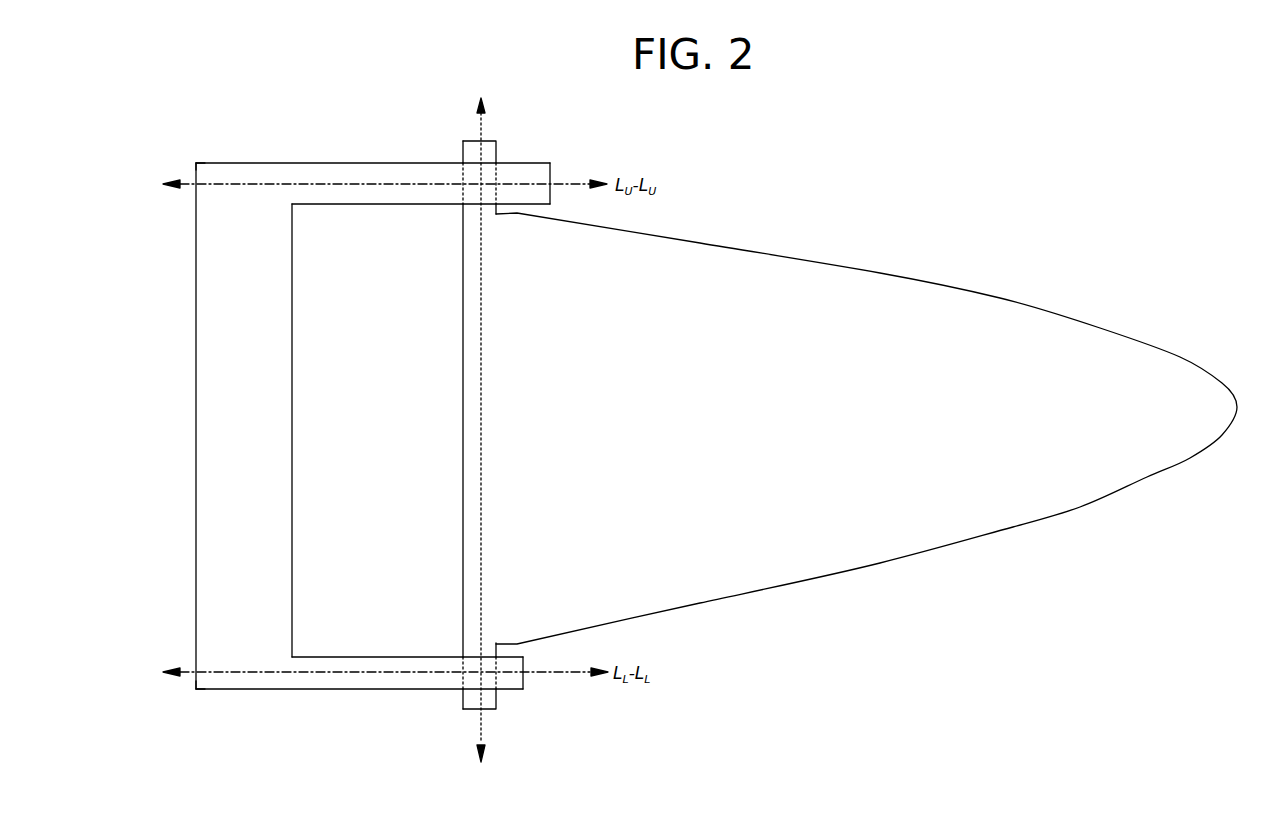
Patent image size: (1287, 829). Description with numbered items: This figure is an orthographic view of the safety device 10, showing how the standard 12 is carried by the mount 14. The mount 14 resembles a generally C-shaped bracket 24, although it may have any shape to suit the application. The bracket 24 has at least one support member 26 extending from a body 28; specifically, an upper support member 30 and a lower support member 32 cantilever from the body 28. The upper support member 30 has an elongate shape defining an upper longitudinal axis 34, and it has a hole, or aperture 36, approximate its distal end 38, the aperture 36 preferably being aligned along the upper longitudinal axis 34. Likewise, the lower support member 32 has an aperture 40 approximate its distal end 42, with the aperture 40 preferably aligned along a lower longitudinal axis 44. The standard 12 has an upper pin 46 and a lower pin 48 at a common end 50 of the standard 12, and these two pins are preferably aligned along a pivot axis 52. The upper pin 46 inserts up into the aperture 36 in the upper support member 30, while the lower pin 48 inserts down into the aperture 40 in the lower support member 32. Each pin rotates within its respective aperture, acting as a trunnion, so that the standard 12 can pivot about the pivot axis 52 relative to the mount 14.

The safety device 10 is at (960, 180).
The standard 12 is at (1103, 327).
The mount 14 is at (318, 163).
The bracket 24 is at (217, 163).
The support member 26 is at (222, 690).
The body 28 is at (195, 275).
The upper support member 30 is at (374, 161).
The lower support member 32 is at (283, 690).
The upper longitudinal axis 34 is at (186, 184).
The aperture 36 is at (497, 200).
The distal end 38 is at (550, 162).
The aperture 40 is at (465, 677).
The distal end 42 is at (523, 689).
The lower longitudinal axis 44 is at (193, 672).
The upper pin 46 is at (463, 141).
The lower pin 48 is at (497, 710).
The common end 50 is at (463, 310).
The pivot axis 52 is at (481, 122).